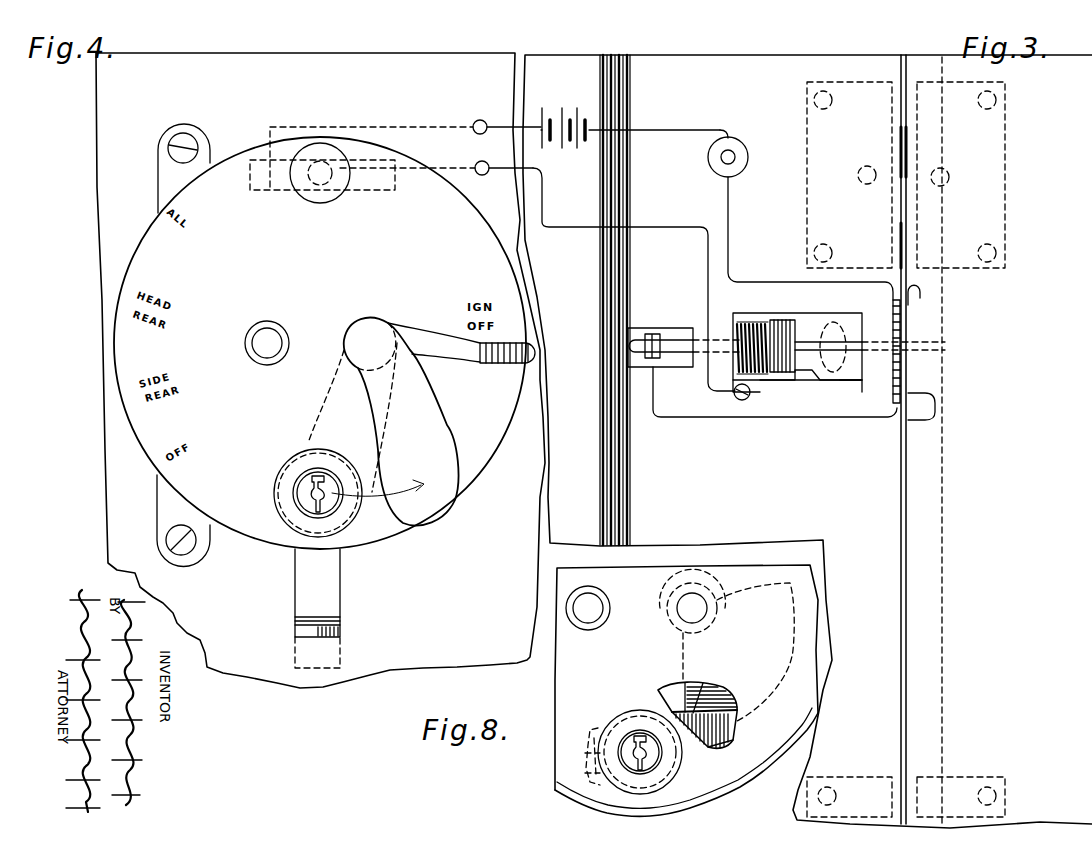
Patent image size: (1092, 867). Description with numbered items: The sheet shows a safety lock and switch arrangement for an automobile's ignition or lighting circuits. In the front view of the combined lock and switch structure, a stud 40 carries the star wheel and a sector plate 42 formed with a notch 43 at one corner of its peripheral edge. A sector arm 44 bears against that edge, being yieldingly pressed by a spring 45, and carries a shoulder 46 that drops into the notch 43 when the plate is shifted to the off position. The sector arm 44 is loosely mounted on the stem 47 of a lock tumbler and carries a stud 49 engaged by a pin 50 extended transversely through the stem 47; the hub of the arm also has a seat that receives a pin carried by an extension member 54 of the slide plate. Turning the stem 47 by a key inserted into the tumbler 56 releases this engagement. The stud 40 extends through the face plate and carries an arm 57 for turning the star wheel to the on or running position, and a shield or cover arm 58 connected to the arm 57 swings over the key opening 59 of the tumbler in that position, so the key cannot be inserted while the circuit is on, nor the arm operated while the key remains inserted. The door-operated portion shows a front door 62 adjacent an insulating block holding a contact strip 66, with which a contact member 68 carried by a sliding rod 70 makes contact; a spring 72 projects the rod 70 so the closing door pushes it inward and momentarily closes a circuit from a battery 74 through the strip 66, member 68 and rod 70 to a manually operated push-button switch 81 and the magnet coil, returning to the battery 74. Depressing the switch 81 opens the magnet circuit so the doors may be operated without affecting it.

In FIG. 8, the stud 40 is at (685, 617).
In FIG. 8, the sector plate 42 is at (678, 695).
In FIG. 8, the notch 43 is at (713, 662).
In FIG. 8, the sector arm 44 is at (737, 728).
In FIG. 8, the spring 45 is at (585, 758).
In FIG. 8, the shoulder 46 is at (735, 737).
In FIG. 8, the tumbler stem 47 is at (628, 750).
In FIG. 8, the stud 49 is at (663, 765).
In FIG. 8, the pin 50 is at (622, 785).
In FIG. 4, the extension member 54 is at (333, 602).
In FIG. 4, the tumbler 56 is at (290, 474).
In FIG. 4, the arm 57 is at (430, 337).
In FIG. 4, the shield or cover arm 58 is at (442, 433).
In FIG. 4, the opening 59 is at (320, 478).
In FIG. 3, the front door 62 is at (942, 439).
In FIG. 3, the contact strip 66 is at (808, 378).
In FIG. 3, the contact member 68 is at (788, 322).
In FIG. 3, the rod 70 is at (862, 382).
In FIG. 3, the spring 72 is at (748, 326).
In FIG. 3, the battery 74 is at (572, 111).
In FIG. 3, the manually operated switch 81 is at (740, 140).